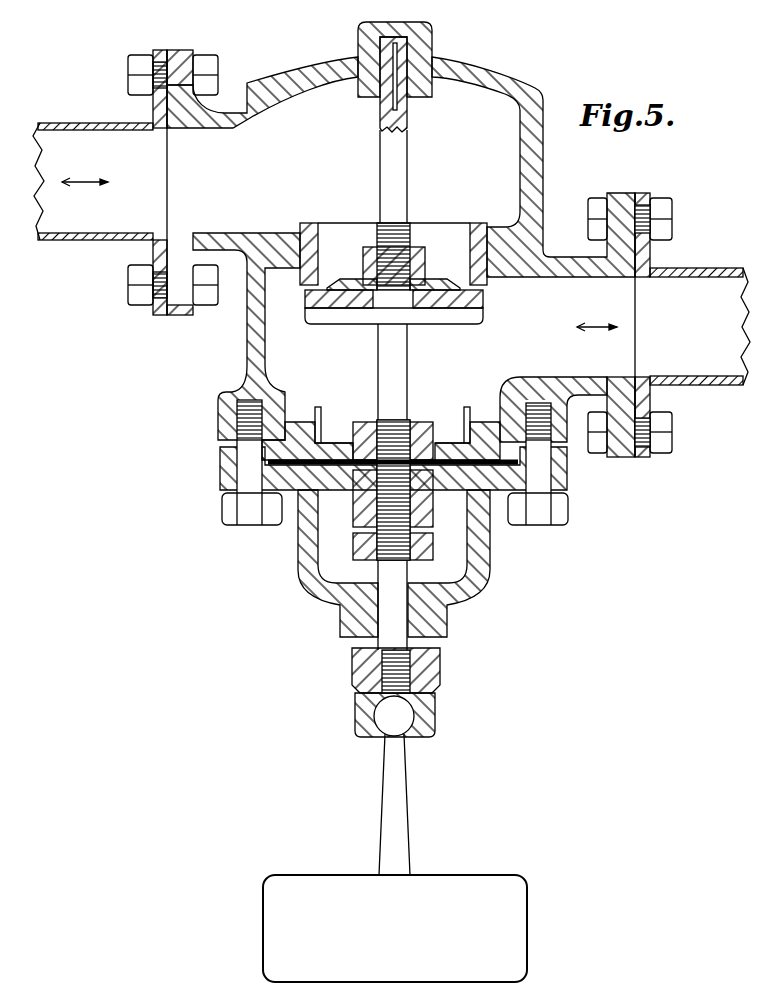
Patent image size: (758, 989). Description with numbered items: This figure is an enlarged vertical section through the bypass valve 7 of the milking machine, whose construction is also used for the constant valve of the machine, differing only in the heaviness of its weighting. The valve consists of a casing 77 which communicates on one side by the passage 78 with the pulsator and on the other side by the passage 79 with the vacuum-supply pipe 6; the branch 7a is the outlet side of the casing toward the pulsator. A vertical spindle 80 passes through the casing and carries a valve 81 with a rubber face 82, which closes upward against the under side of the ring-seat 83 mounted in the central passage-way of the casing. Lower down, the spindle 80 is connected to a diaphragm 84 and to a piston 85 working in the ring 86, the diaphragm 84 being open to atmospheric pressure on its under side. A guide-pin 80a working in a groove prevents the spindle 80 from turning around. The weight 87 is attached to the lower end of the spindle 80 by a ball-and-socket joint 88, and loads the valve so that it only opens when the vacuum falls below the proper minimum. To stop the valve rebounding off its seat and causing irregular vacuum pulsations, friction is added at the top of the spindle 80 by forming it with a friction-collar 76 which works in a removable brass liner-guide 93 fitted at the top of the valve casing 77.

The vacuum-supply pipe 6 is at (663, 326).
The bypass valve 7 is at (533, 167).
The outlet pipe 7a is at (93, 181).
The friction-collar 76 is at (408, 56).
The casing 77 is at (387, 291).
The passage 78 is at (173, 182).
The passage 79 is at (627, 325).
The vertical spindle 80 is at (392, 181).
The guide-pin 80a is at (358, 607).
The valve 81 is at (447, 320).
The rubber face 82 is at (468, 303).
The ring-seat 83 is at (330, 233).
The diaphragm 84 is at (463, 468).
The piston 85 is at (455, 418).
The ring 86 is at (296, 424).
The weight 87 is at (395, 858).
The ball-and-socket joint 88 is at (381, 692).
The liner-guide 93 is at (392, 32).